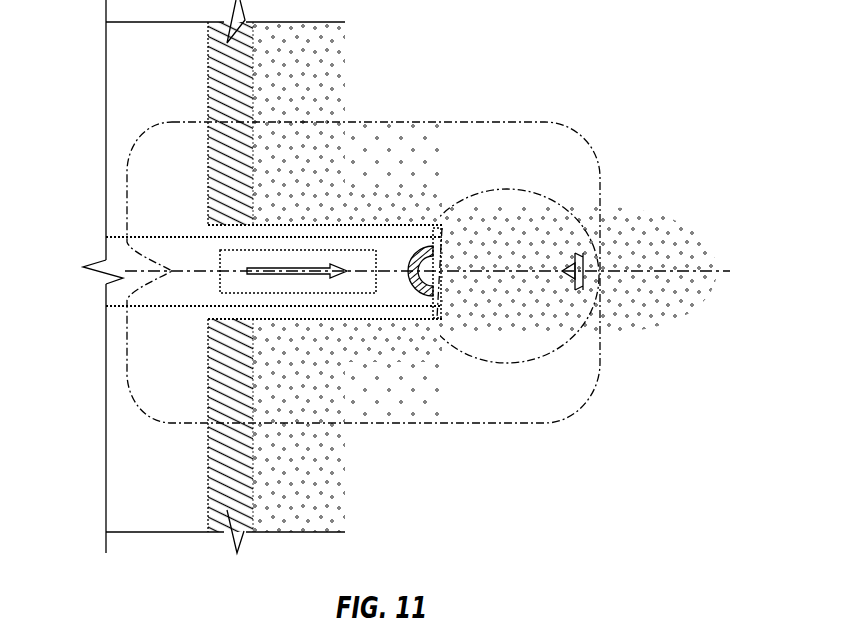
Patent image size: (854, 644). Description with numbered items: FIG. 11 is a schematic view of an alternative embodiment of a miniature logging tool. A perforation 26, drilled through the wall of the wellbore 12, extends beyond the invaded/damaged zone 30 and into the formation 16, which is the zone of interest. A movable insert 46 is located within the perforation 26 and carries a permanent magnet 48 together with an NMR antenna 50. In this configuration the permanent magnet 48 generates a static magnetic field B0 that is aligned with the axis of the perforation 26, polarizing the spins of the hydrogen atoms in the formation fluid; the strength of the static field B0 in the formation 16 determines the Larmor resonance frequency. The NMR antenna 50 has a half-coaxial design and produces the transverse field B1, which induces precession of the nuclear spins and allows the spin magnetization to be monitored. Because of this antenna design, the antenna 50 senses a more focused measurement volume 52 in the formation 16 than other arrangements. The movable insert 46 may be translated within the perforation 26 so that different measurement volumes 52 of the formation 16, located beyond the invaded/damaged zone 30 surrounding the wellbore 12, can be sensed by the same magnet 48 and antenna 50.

The wellbore 12 is at (170, 104).
The invaded/damaged zone 30 is at (203, 452).
The formation/zone of interest 16 is at (336, 447).
The movable insert 46 is at (172, 307).
The perforation or sidetrack borehole 26 is at (420, 235).
The permanent magnet 48 is at (233, 252).
The NMR antenna 50 is at (430, 292).
The measurement volume 52 is at (584, 289).
The static magnetic field B0 is at (312, 271).
The transverse field B1 is at (577, 256).